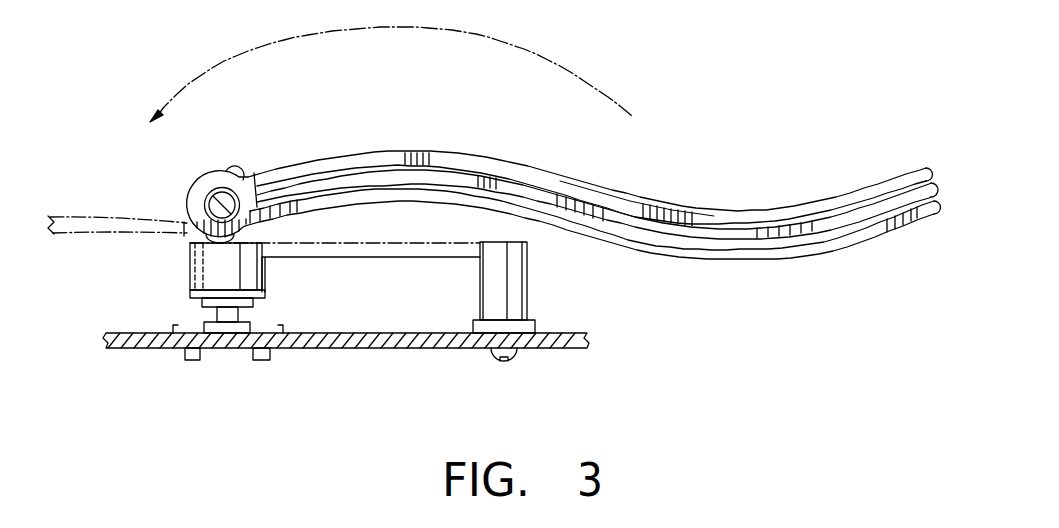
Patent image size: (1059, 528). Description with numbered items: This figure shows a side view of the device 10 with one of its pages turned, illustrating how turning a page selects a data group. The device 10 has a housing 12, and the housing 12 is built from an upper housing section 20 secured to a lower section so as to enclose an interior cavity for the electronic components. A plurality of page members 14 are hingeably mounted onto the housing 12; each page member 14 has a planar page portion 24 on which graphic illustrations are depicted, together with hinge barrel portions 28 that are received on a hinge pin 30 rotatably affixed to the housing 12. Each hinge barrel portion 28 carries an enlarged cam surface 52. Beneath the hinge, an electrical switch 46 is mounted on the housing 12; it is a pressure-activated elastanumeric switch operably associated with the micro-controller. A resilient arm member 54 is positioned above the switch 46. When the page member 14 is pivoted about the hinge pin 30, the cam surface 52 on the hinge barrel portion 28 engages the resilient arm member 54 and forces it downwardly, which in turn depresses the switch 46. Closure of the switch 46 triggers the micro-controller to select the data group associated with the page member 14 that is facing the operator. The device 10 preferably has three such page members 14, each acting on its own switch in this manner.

The device 10 is at (680, 112).
The housing 12 is at (148, 360).
The page member 14 is at (86, 212).
The upper housing section 20 is at (340, 349).
The planar page portion 24 is at (464, 158).
The hinge barrel portion 28 is at (207, 185).
The hinge pin 30 is at (205, 204).
The electrical switch 46 is at (215, 318).
The cam surface 52 is at (228, 171).
The resilient arm member 54 is at (418, 245).